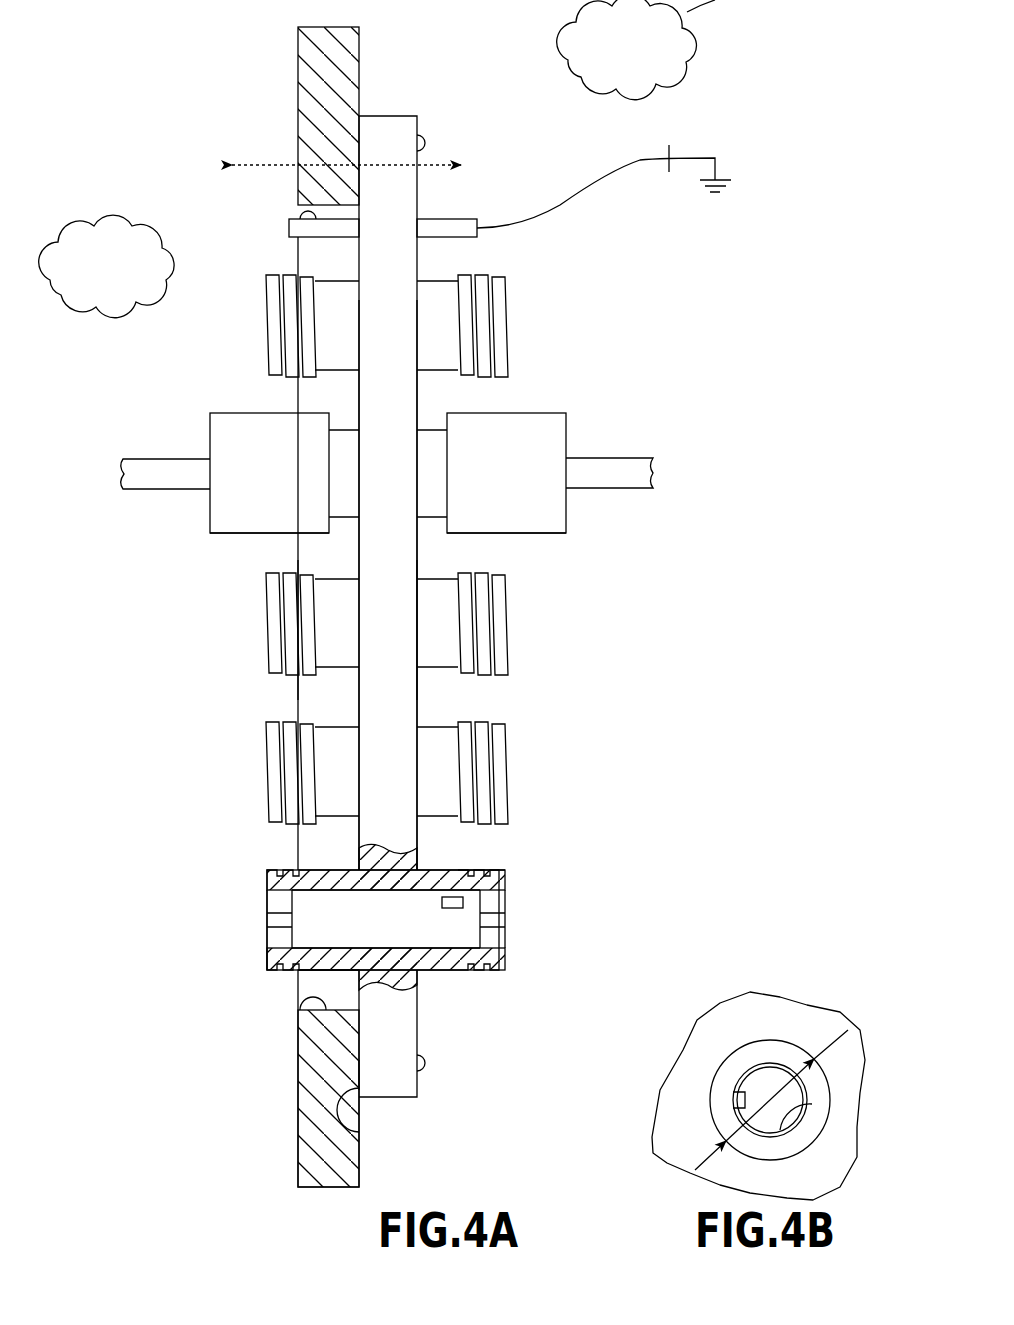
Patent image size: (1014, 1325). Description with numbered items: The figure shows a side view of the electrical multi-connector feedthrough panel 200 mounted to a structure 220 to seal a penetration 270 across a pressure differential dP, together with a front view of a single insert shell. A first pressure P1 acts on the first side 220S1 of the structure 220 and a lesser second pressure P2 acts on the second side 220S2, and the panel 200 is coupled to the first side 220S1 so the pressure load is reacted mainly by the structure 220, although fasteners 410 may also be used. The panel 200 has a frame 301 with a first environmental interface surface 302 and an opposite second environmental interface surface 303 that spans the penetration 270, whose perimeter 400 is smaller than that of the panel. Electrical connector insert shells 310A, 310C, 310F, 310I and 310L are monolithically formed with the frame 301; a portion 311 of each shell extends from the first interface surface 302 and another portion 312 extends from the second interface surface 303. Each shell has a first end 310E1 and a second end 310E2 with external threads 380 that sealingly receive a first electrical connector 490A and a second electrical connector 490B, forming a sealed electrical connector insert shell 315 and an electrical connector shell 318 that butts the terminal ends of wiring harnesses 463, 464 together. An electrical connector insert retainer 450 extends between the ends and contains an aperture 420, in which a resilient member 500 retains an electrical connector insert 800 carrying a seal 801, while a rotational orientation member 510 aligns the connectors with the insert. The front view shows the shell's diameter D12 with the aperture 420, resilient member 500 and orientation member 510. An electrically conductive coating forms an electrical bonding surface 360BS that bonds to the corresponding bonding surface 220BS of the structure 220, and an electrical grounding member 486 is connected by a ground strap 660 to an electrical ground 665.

In FIG. 4A, the electrical multi-connector feedthrough panel 200 is at (405, 78).
In FIG. 4A, the structure 220 is at (352, 47).
In FIG. 4A, the first side 220S1 is at (672, 678).
In FIG. 4A, the second side 220S2 is at (187, 667).
In FIG. 4A, the bonding surface 220BS is at (359, 1075).
In FIG. 4A, the penetration 270 is at (258, 1005).
In FIG. 4A, the frame 301 is at (405, 1030).
In FIG. 4A, the first environmental interface surface 302 is at (417, 690).
In FIG. 4A, the second environmental interface surface 303 is at (358, 695).
In FIG. 4A, the electrical connector insert shell 310A is at (505, 346).
In FIG. 4A, the electrical connector insert shell 310C is at (432, 430).
In FIG. 4A, the electrical connector insert shell 310F is at (505, 620).
In FIG. 4A, the electrical connector insert shell 310I is at (505, 766).
In FIG. 4A, the electrical connector insert shell 310L is at (505, 880).
In FIG. 4A, the first end 310E1 is at (535, 926).
In FIG. 4A, the second end 310E2 is at (242, 925).
In FIG. 4A, the portion 311 is at (421, 469).
In FIG. 4A, the portion 312 is at (349, 469).
In FIG. 4A, the sealed electrical connector insert shell 315 is at (240, 405).
In FIG. 4A, the electrical connector shell 318 is at (345, 518).
In FIG. 4A, the electrical bonding surface 360BS is at (478, 968).
In FIG. 4A, the external threads 380 is at (267, 280).
In FIG. 4A, the perimeter 400 is at (300, 212).
In FIG. 4A, the fasteners 410 is at (426, 143).
In FIG. 4A, the aperture 420 is at (246, 890).
In FIG. 4B, the aperture 420 is at (770, 1082).
In FIG. 4A, the electrical connector insert retainer 450 is at (255, 945).
In FIG. 4A, the wiring harness 463 is at (640, 458).
In FIG. 4A, the wiring harness 464 is at (122, 490).
In FIG. 4A, the electrical grounding member 486 is at (289, 228).
In FIG. 4A, the first electrical connector 490A is at (553, 533).
In FIG. 4A, the second electrical connector 490B is at (222, 533).
In FIG. 4A, the resilient member 500 is at (292, 893).
In FIG. 4B, the resilient member 500 is at (810, 1105).
In FIG. 4A, the rotational orientation member 510 is at (500, 918).
In FIG. 4B, the rotational orientation member 510 is at (748, 1068).
In FIG. 4A, the ground strap/wire 660 is at (558, 206).
In FIG. 4A, the electrical ground 665 is at (692, 158).
In FIG. 4A, the electrical connector insert 800 is at (447, 928).
In FIG. 4A, the seal 801 is at (455, 897).
In FIG. 4B, the diameter D12 is at (848, 1031).
In FIG. 4A, the first pressure P1 is at (636, 50).
In FIG. 4A, the second pressure P2 is at (118, 222).
In FIG. 4A, the pressure differential dP is at (273, 163).